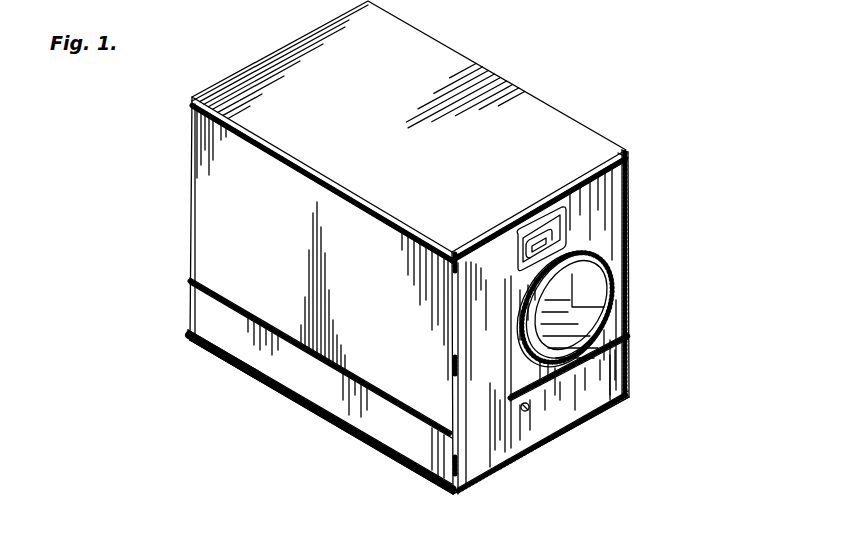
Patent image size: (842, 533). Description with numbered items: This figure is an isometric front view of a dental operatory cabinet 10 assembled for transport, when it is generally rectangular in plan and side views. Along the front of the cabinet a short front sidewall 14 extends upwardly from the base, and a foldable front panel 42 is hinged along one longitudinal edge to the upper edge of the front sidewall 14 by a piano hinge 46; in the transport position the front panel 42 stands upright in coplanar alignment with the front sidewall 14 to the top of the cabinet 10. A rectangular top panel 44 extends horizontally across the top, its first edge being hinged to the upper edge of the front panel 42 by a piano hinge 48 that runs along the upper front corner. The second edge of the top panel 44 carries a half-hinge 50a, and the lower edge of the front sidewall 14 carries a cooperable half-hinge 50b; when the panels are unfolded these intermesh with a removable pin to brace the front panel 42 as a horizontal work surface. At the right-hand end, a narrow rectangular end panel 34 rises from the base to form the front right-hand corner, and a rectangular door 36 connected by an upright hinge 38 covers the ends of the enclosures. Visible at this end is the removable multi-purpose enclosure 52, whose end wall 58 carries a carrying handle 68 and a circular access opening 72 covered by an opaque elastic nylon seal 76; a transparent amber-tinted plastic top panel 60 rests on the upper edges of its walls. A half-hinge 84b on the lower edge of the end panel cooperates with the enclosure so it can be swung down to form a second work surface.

The operatory cabinet 10 is at (180, 212).
The front sidewall 14 is at (387, 417).
The end panel 34 is at (500, 440).
The door 36 is at (592, 402).
The hinge 38 is at (623, 369).
The front panel 42 is at (205, 250).
The top panel 44 is at (277, 67).
The piano hinge 46 is at (225, 305).
The piano hinge 48 is at (227, 122).
The half-hinge 50a is at (627, 168).
The half-hinge 50b is at (235, 368).
The removable enclosure 52 is at (637, 303).
The end wall 58 is at (608, 205).
The plastic top panel 60 is at (592, 190).
The carrying handle 68 is at (522, 243).
The access opening 72 is at (607, 261).
The nylon seal 76 is at (578, 328).
The half-hinge 84b is at (483, 478).